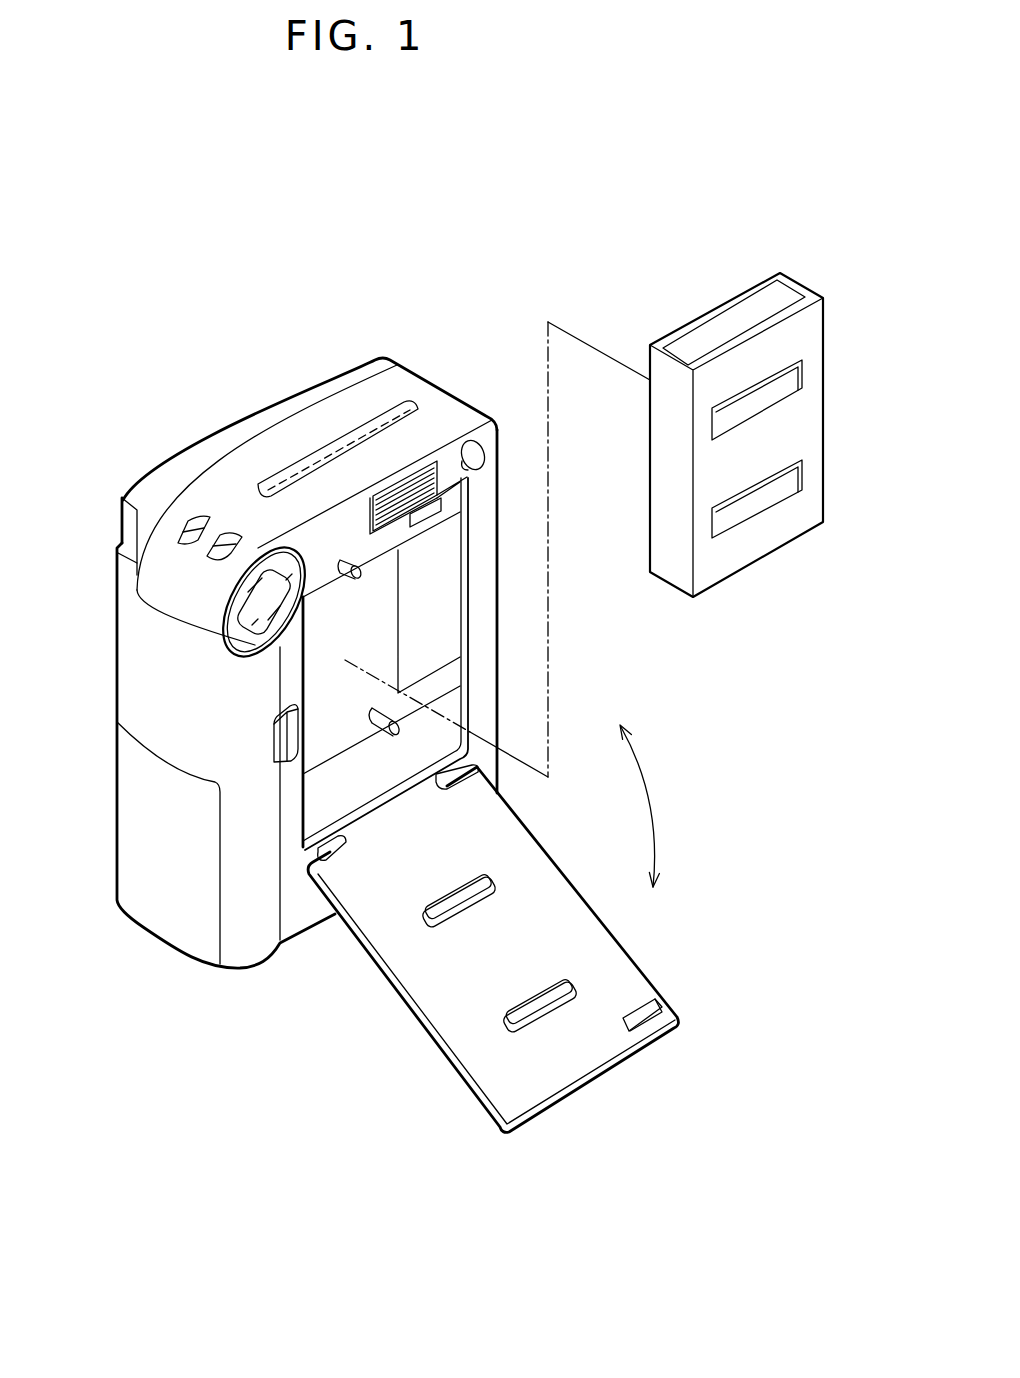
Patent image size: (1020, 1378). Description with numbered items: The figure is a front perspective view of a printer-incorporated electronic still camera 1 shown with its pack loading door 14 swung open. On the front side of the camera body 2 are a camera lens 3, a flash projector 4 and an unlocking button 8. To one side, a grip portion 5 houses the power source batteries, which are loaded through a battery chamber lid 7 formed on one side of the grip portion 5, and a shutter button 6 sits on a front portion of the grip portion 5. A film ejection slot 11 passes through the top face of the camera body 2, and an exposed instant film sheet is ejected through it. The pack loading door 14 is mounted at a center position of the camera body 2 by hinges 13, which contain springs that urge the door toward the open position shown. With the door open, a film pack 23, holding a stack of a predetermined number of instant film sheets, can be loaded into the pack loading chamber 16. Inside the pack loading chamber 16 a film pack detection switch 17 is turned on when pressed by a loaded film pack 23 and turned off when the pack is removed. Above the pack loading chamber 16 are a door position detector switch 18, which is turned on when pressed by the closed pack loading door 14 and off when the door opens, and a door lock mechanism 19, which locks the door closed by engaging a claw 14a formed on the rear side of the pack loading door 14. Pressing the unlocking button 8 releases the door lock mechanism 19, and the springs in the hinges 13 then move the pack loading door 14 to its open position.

The printer-incorporated electronic still camera 1 is at (180, 300).
The camera body 2 is at (146, 930).
The camera lens 3 is at (252, 597).
The flash projector 4 is at (407, 492).
The grip portion 5 is at (245, 917).
The shutter button 6 is at (290, 732).
The battery chamber lid 7 is at (160, 817).
The unlocking button 8 is at (476, 456).
The film ejection slot 11 is at (317, 447).
The hinges 13 is at (328, 856).
The pack loading door 14 is at (547, 1108).
The claw 14a is at (652, 1024).
The pack loading chamber 16 is at (360, 610).
The film pack detection switch 17 is at (390, 730).
The door position detector switch 18 is at (345, 562).
The door lock mechanism 19 is at (420, 514).
The film pack 23 is at (765, 553).